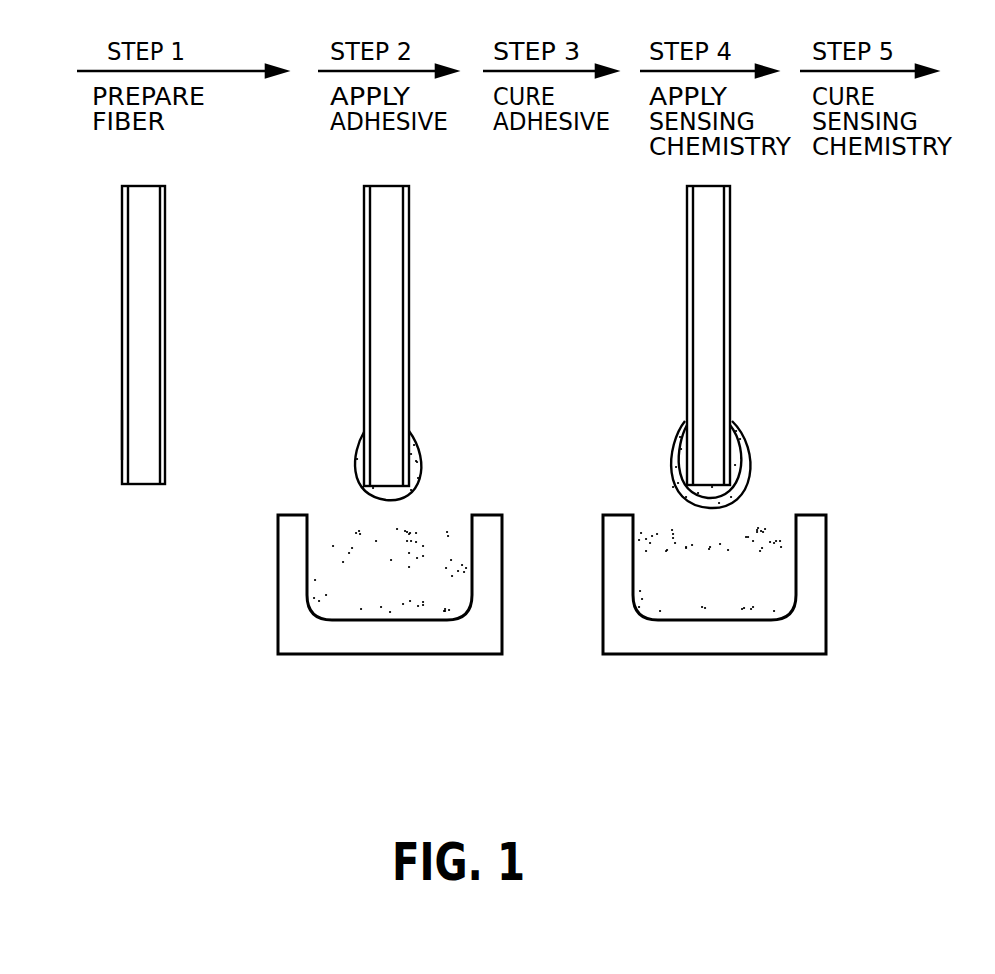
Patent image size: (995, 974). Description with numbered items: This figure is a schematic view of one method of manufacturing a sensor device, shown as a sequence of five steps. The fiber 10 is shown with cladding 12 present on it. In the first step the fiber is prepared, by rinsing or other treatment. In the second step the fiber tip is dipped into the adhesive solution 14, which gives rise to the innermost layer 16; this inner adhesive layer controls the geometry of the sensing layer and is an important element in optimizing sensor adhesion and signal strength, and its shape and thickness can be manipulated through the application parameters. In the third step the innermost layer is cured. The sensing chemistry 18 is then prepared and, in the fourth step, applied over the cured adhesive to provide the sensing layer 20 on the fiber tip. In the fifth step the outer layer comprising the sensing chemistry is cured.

The fiber 10 is at (140, 300).
The cladding 12 is at (122, 432).
The adhesive solution 14 is at (307, 555).
The innermost layer 16 is at (357, 463).
The sensing chemistry 18 is at (640, 560).
The sensing layer 20 is at (743, 447).